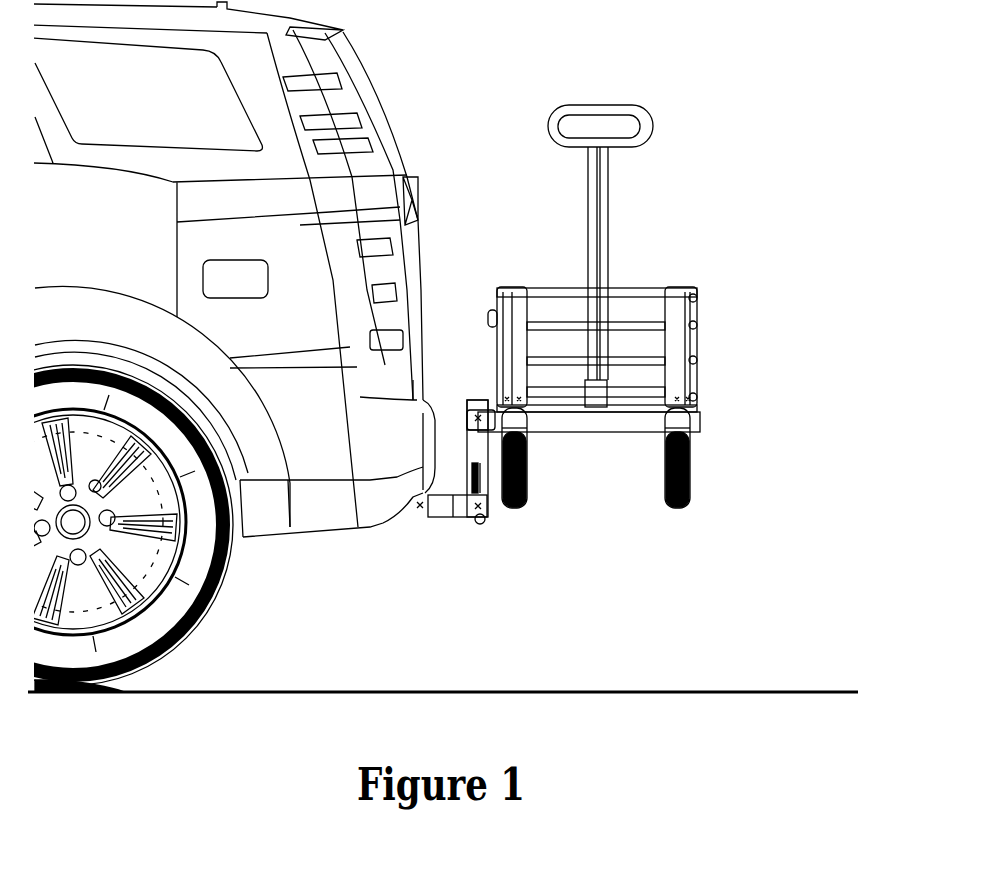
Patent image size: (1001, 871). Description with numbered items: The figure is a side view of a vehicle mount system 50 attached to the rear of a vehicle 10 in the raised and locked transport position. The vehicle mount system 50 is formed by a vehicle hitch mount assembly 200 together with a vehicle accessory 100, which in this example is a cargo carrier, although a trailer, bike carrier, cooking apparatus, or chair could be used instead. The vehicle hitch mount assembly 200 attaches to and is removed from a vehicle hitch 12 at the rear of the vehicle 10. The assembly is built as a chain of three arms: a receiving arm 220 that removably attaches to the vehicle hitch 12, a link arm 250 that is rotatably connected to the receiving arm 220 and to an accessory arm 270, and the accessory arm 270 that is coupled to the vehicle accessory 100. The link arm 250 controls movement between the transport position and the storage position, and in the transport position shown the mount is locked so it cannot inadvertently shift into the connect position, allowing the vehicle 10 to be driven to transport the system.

The vehicle 10 is at (424, 64).
The vehicle hitch 12 is at (424, 557).
The vehicle mount system 50 is at (698, 109).
The vehicle accessory 100 is at (642, 288).
The vehicle hitch mount assembly 200 is at (485, 440).
The receiving arm 220 is at (442, 519).
The link arm 250 is at (488, 492).
The accessory arm 270 is at (572, 432).